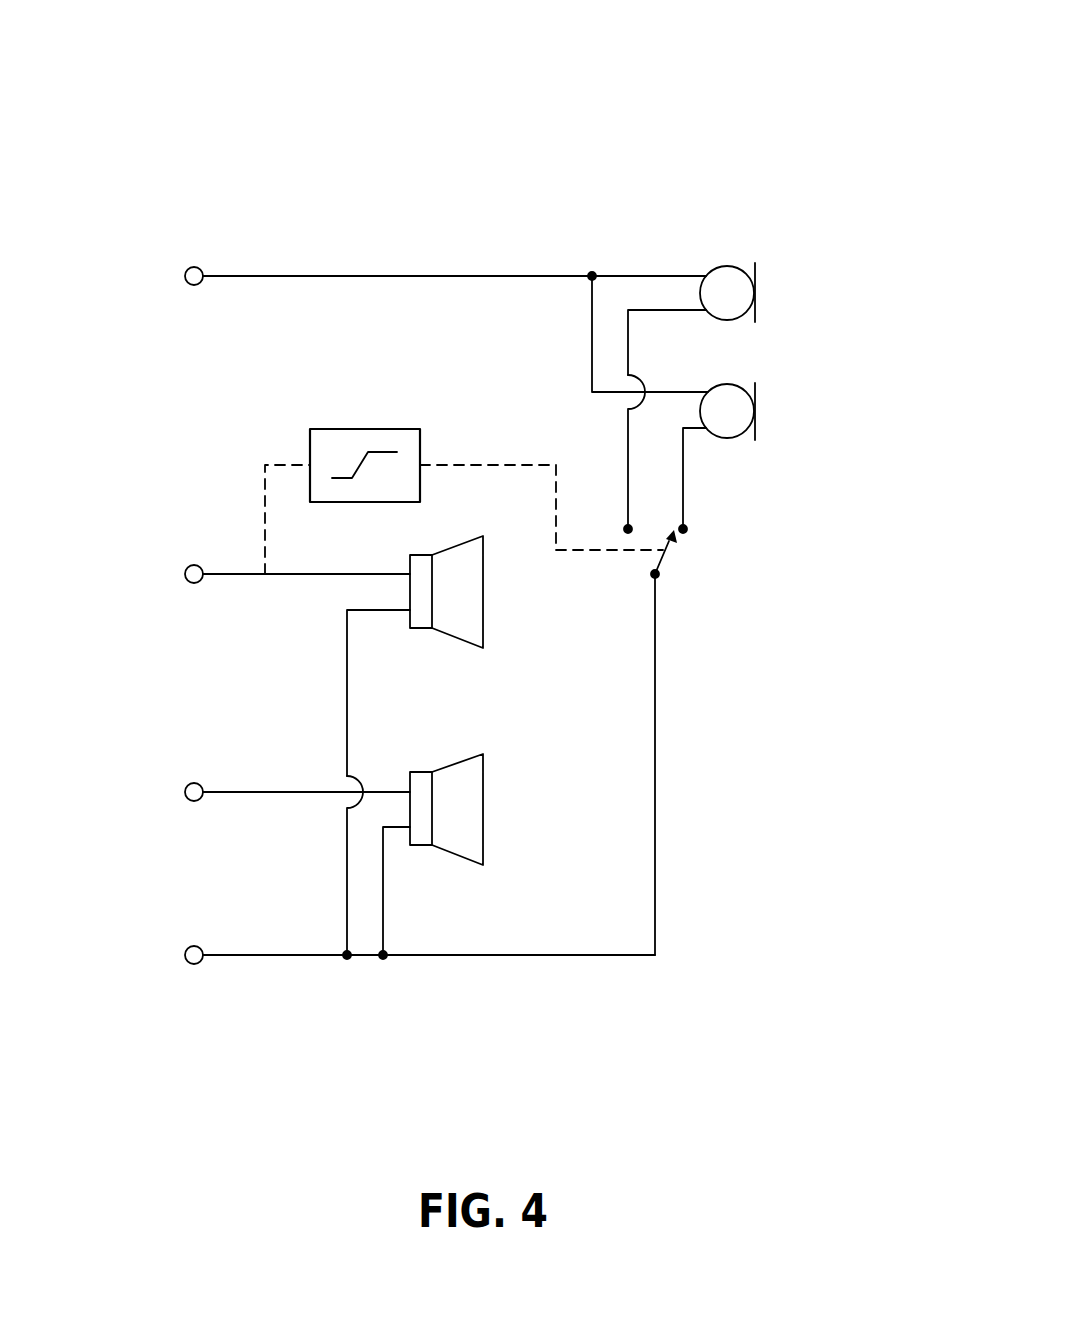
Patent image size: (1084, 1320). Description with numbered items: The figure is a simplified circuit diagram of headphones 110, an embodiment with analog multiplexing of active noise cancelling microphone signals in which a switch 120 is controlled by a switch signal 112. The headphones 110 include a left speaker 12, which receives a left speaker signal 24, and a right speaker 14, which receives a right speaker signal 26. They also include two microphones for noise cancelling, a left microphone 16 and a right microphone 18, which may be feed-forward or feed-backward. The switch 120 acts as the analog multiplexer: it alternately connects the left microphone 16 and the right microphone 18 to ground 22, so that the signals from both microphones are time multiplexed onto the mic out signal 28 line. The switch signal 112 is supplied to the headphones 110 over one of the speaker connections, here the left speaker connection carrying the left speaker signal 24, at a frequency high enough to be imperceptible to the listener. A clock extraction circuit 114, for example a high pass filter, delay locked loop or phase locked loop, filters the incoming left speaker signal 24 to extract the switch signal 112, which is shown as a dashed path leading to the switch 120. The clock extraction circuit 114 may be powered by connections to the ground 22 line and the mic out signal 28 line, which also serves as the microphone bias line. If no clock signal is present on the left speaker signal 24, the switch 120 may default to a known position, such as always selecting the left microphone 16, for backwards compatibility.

The headphones 110 is at (280, 85).
The mic out signal 28 is at (245, 276).
The left microphone 16 is at (730, 232).
The right microphone 18 is at (783, 396).
The clock extraction circuit 114 is at (355, 429).
The switch signal 112 is at (473, 463).
The left speaker signal 24 is at (283, 577).
The left speaker 12 is at (509, 633).
The right speaker signal 26 is at (248, 788).
The right speaker 14 is at (511, 794).
The ground 22 is at (265, 945).
The switch 120 is at (701, 551).